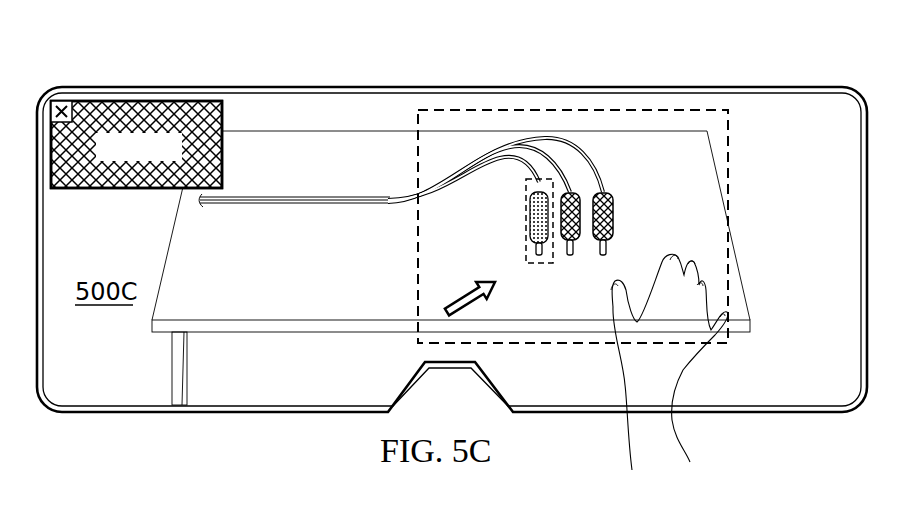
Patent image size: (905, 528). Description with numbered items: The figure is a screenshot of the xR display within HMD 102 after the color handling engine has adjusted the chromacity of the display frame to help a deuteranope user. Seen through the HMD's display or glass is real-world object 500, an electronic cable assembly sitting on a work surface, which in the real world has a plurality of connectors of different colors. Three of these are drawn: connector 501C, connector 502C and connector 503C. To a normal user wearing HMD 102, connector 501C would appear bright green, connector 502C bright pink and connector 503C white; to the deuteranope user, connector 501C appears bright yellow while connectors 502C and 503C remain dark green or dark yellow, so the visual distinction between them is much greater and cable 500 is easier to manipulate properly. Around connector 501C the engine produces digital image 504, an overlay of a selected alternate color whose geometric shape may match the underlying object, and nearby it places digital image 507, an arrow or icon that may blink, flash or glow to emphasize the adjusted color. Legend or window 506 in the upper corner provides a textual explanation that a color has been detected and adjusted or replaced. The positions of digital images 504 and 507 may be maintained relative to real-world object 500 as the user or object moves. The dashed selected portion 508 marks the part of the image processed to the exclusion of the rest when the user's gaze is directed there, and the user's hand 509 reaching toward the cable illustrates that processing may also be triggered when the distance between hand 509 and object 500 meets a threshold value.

The HMD 102 is at (343, 87).
The real-world object 500 is at (300, 204).
The connector 501C is at (529, 220).
The connector 502C is at (573, 257).
The connector 503C is at (613, 215).
The digital image 504 is at (526, 247).
The legend or window 506 is at (126, 188).
The digital image 507 is at (445, 284).
The selected portion 508 is at (730, 160).
The user's hand 509 is at (683, 372).